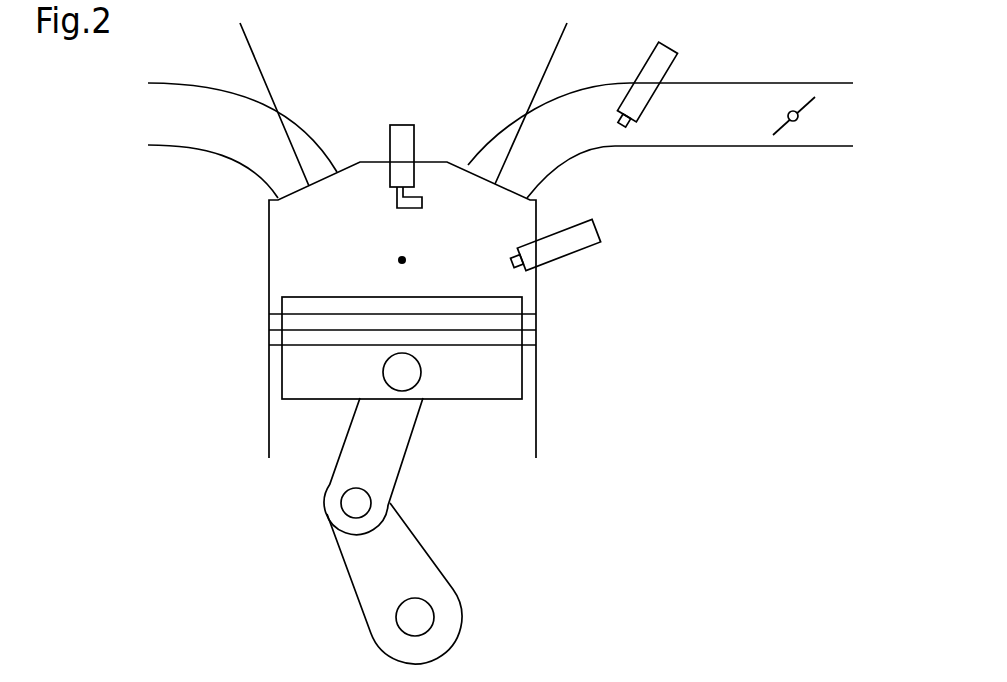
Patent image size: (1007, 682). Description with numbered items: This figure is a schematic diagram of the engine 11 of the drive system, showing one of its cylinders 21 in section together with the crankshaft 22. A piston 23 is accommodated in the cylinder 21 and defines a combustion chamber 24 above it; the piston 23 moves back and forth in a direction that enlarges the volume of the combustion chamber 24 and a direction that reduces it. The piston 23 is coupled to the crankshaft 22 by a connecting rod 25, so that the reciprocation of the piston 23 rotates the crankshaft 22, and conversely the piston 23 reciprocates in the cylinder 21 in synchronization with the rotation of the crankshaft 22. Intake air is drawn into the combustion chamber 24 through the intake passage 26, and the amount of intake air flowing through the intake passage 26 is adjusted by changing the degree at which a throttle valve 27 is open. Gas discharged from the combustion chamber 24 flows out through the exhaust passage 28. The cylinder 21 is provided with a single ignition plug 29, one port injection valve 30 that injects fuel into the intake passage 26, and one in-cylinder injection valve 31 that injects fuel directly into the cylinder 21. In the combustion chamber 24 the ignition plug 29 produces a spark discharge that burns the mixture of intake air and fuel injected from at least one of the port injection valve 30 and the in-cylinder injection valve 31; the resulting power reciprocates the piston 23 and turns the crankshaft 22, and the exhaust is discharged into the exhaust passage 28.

The engine 11 is at (208, 50).
The cylinder 21 is at (269, 228).
The crankshaft 22 is at (453, 612).
The piston 23 is at (293, 372).
The combustion chamber 24 is at (399, 260).
The connecting rod 25 is at (403, 429).
The intake passage 26 is at (768, 148).
The throttle valve 27 is at (807, 106).
The exhaust passage 28 is at (162, 85).
The ignition plug 29 is at (415, 143).
The port injection valve 30 is at (655, 103).
The in-cylinder injection valve 31 is at (582, 250).